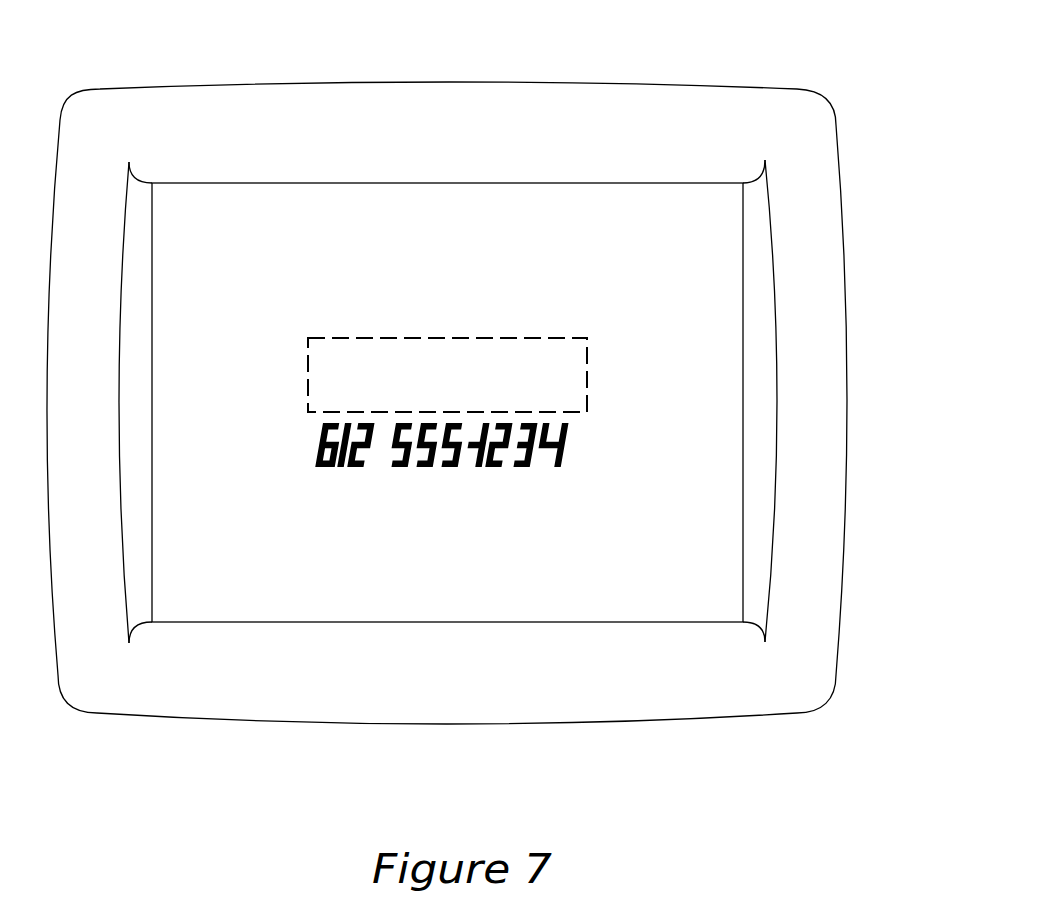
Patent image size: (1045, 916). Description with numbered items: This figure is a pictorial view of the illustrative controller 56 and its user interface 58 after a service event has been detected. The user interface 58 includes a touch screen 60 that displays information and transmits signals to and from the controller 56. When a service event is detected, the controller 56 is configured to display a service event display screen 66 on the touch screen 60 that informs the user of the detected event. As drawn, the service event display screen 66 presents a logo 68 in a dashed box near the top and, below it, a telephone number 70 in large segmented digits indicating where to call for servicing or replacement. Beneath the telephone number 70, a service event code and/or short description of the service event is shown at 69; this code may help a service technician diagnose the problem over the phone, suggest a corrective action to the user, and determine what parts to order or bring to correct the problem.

The controller 56 is at (822, 83).
The user interface 58 is at (745, 402).
The touch screen 60 is at (538, 295).
The service event display screen 66 is at (420, 220).
The logo 68 is at (317, 347).
The service event code and/or short description 69 is at (318, 563).
The telephone number 70 is at (315, 467).